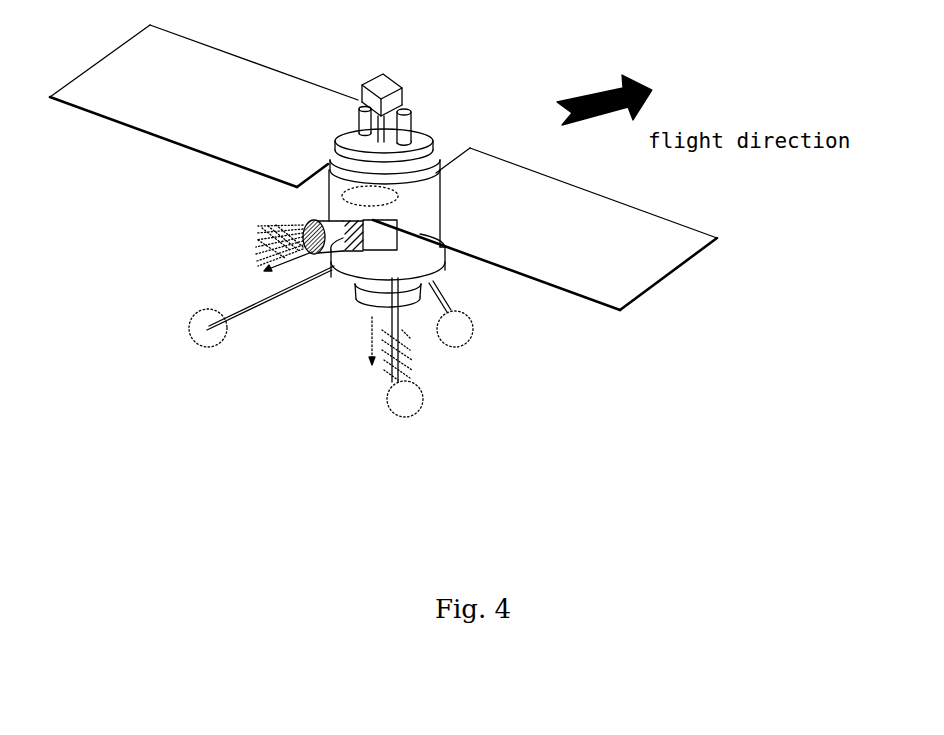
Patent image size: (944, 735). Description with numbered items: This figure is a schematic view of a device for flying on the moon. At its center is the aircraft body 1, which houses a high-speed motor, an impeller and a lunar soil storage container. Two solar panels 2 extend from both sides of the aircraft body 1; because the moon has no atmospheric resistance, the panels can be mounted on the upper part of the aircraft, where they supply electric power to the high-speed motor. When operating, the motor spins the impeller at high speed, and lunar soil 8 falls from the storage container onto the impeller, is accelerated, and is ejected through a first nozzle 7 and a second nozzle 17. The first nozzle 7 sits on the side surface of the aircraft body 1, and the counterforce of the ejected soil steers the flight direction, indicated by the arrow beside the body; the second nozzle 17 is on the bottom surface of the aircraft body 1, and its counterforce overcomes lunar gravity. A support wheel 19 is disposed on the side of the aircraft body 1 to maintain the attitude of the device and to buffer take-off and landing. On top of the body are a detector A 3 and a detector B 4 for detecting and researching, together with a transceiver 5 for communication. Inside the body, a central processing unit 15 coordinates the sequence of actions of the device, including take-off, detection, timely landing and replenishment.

The aircraft body 1 is at (430, 258).
The solar panel 2 is at (550, 270).
The detector A 3 is at (407, 110).
The detector B 4 is at (402, 82).
The transceiver 5 is at (357, 100).
The first nozzle 7 is at (303, 221).
The lunar soil 8 is at (377, 385).
The central processing unit 15 is at (393, 190).
The second nozzle 17 is at (355, 302).
The support wheel 19 is at (397, 418).